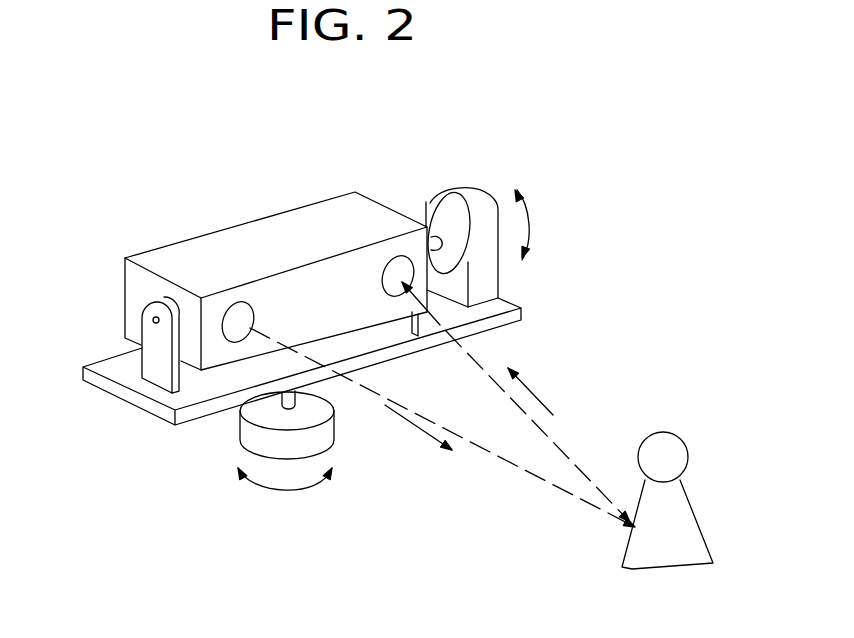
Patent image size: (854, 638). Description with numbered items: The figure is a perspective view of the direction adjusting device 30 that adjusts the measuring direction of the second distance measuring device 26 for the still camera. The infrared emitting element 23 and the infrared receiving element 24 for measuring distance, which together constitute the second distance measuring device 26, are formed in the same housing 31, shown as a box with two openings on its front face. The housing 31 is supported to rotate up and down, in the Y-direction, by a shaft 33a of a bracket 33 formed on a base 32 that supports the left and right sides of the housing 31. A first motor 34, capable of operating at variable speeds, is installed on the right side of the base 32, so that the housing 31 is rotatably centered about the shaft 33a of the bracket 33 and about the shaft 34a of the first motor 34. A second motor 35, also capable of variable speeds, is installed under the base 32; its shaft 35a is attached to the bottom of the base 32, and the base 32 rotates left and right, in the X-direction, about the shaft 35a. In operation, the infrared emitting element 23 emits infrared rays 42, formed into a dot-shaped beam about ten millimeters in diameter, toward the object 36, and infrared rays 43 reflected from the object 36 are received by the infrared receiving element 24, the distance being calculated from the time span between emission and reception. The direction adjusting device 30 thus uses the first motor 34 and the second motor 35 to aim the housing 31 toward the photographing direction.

The direction adjusting device 30 is at (236, 172).
The second distance measuring device 26 is at (313, 226).
The housing 31 is at (178, 241).
The infrared emitting element 23 is at (243, 302).
The infrared receiving element 24 is at (386, 262).
The base 32 is at (153, 405).
The bracket 33 is at (148, 362).
The shaft 33a is at (146, 313).
The first motor 34 is at (479, 219).
The shaft 34a is at (428, 214).
The second motor 35 is at (318, 438).
The shaft 35a is at (262, 422).
The object 36 is at (660, 443).
The infrared rays 42 is at (498, 458).
The infrared rays 43 is at (562, 447).